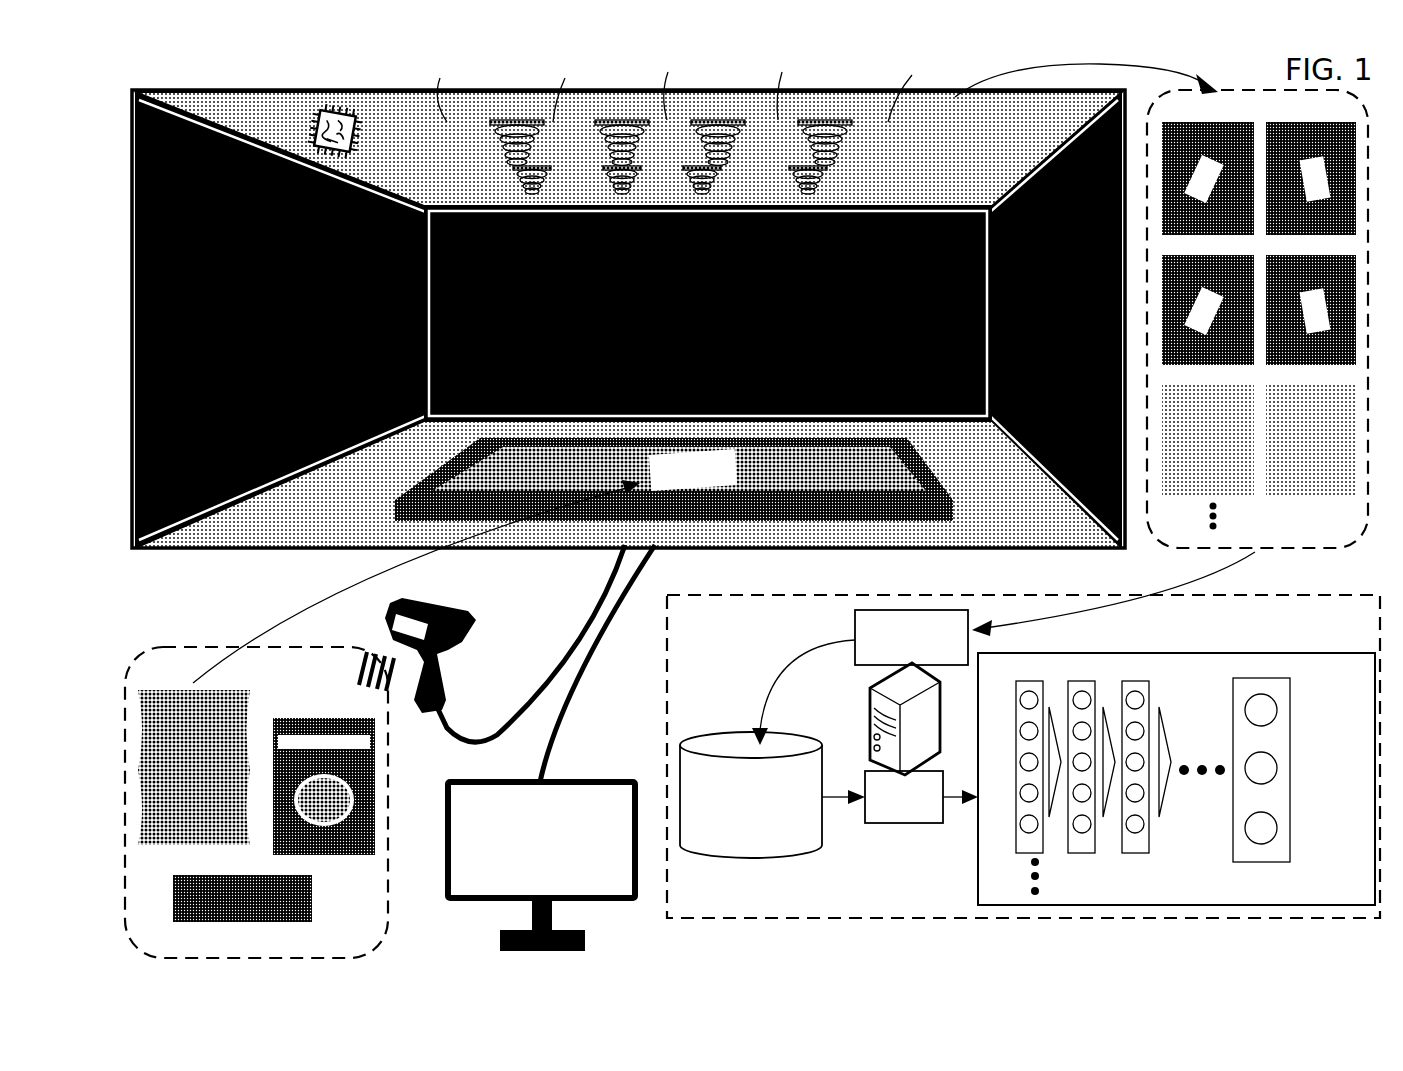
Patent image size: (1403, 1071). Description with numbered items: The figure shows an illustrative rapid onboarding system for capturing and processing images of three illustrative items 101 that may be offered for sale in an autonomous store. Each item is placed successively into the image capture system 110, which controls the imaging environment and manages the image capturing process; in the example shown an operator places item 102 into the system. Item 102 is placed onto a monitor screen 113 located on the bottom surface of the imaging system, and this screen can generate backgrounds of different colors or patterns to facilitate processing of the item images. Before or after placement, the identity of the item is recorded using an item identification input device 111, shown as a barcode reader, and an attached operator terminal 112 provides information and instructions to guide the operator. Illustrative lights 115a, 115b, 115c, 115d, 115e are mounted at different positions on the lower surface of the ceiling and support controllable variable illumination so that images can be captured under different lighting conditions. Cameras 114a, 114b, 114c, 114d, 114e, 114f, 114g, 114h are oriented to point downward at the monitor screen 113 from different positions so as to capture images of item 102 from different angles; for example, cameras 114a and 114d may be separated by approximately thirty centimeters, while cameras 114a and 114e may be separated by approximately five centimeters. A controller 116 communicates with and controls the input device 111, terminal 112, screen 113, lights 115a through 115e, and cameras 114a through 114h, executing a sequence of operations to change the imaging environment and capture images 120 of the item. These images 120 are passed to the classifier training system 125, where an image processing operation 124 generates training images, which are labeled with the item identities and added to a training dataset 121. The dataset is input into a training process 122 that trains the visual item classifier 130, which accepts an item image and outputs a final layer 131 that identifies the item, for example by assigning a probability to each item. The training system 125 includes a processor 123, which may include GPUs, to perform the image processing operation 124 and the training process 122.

The items 101 is at (281, 779).
The item 102 is at (173, 690).
The image capture system 110 is at (222, 86).
The item identification input device 111 is at (456, 672).
The operator terminal 112 is at (592, 905).
The monitor screen 113 is at (810, 499).
The camera 114a is at (517, 118).
The camera 114b is at (615, 118).
The camera 114c is at (720, 118).
The camera 114d is at (824, 118).
The camera 114e is at (518, 186).
The camera 114f is at (616, 186).
The camera 114g is at (700, 186).
The camera 114h is at (800, 186).
The light 115a is at (436, 86).
The light 115b is at (561, 86).
The light 115c is at (678, 82).
The light 115d is at (784, 82).
The light 115e is at (923, 85).
The controller 116 is at (338, 108).
The images 120 is at (1325, 549).
The training dataset 121 is at (740, 858).
The training process 122 is at (890, 823).
The processor 123 is at (870, 718).
The image processing operation 124 is at (855, 622).
The classifier training system 125 is at (866, 918).
The visual item classifier 130 is at (1176, 764).
The final layer 131 is at (1268, 862).